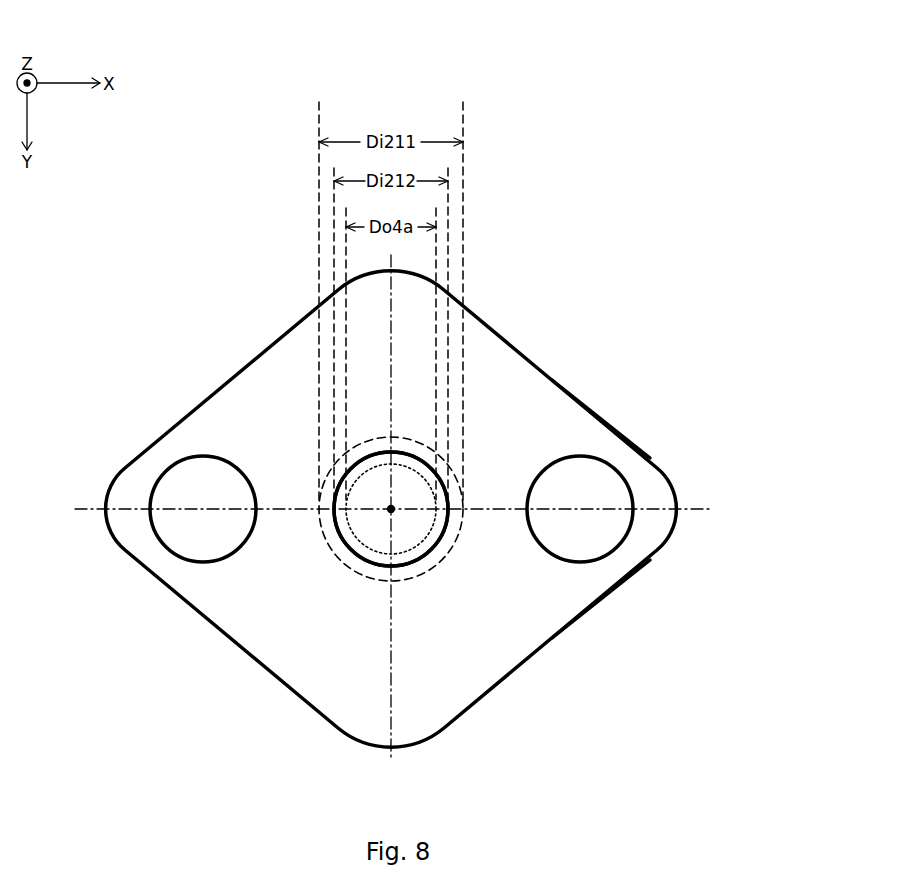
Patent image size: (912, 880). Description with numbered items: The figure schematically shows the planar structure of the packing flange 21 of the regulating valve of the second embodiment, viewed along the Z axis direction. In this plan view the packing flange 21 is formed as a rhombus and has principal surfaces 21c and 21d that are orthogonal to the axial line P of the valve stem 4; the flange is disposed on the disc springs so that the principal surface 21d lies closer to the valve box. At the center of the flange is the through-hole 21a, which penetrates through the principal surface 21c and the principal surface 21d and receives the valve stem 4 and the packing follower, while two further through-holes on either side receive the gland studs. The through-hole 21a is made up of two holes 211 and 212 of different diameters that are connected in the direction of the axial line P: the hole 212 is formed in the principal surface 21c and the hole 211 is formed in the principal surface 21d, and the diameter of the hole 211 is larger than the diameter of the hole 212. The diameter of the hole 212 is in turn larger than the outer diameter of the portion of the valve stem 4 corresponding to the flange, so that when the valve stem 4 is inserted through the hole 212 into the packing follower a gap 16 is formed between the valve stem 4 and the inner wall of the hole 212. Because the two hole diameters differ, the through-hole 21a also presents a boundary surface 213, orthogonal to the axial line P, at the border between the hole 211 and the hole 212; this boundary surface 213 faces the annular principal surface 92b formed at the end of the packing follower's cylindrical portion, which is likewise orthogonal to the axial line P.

The packing flange 21 is at (777, 240).
The through-hole 21a is at (445, 473).
The hole 211 is at (449, 481).
The hole 212 is at (395, 428).
The boundary surface 213 is at (500, 578).
The principal surface 92b is at (457, 535).
The principal surface 21c is at (583, 436).
The principal surface 21d is at (585, 585).
The gap 16 is at (363, 465).
The valve stem 4 is at (353, 483).
The axial line P is at (399, 496).